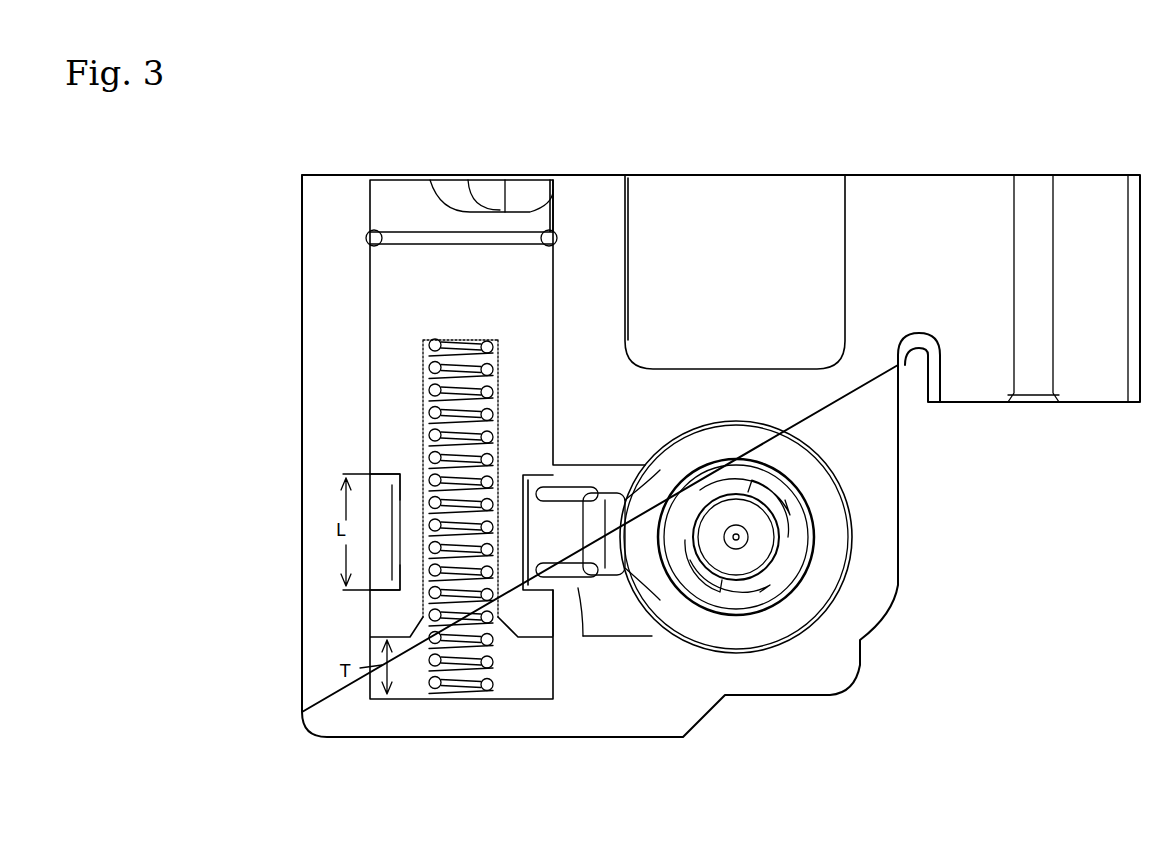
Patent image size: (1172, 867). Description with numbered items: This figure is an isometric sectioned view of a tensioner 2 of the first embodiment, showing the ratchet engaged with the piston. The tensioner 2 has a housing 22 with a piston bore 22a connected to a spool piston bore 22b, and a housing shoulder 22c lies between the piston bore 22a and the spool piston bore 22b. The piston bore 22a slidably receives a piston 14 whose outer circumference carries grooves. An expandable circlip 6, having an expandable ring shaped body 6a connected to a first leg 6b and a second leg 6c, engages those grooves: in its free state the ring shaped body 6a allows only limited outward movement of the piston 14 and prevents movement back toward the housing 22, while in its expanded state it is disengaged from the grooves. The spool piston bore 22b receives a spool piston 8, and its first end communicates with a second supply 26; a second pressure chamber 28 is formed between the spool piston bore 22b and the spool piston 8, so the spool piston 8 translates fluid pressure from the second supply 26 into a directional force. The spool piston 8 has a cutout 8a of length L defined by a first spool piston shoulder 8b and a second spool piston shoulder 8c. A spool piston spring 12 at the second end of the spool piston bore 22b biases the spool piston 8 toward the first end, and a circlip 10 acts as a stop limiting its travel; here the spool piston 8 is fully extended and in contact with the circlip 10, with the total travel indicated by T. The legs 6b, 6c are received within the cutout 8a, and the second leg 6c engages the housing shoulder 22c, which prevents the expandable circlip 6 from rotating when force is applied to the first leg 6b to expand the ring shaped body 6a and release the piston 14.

The tensioner 2 is at (113, 241).
The expandable circlip 6 is at (615, 490).
The expandable ring shaped body 6a is at (648, 600).
The first leg 6b is at (560, 490).
The second leg 6c is at (550, 575).
The spool piston 8 is at (400, 343).
The cutout 8a is at (380, 532).
The first spool piston shoulder 8b is at (385, 484).
The second spool piston shoulder 8c is at (385, 582).
The circlip 10 is at (368, 243).
The spool piston spring 12 is at (445, 688).
The piston 14 is at (755, 530).
The housing 22 is at (980, 403).
The piston bore 22a is at (795, 635).
The spool piston bore 22b is at (555, 287).
The housing shoulder 22c is at (565, 637).
The second supply 26 is at (515, 195).
The second pressure chamber 28 is at (418, 200).